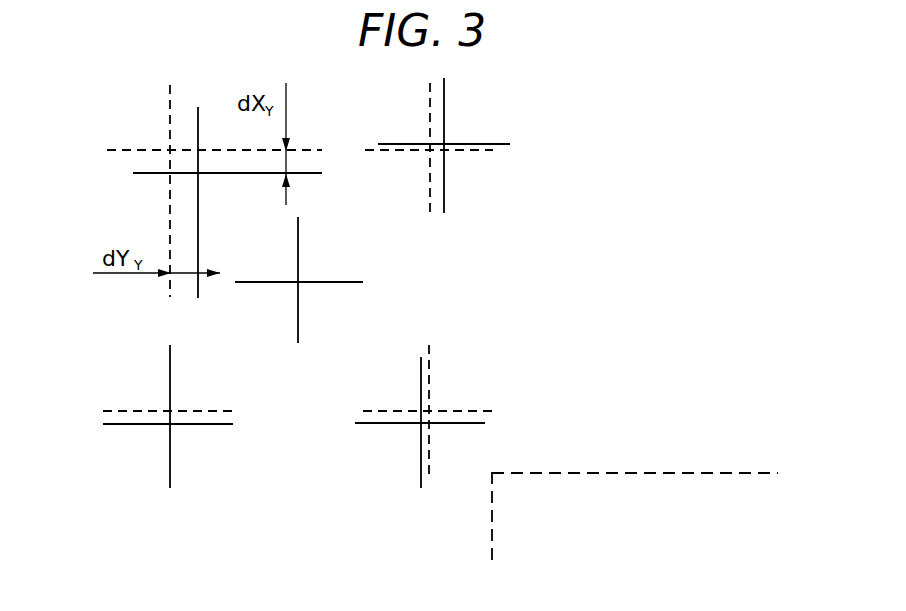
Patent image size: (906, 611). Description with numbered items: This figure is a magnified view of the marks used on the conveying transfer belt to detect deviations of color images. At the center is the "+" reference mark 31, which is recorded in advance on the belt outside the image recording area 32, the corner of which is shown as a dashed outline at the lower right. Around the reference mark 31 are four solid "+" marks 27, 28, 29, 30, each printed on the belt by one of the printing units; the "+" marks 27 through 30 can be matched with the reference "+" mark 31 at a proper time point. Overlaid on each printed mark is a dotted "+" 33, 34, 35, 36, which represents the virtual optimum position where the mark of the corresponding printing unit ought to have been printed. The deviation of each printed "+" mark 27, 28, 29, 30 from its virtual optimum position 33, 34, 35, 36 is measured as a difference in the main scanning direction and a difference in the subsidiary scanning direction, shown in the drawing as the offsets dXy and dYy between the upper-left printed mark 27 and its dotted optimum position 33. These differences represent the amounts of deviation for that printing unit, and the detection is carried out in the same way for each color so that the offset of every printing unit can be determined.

The "+" mark 27 is at (141, 173).
The "+" mark 28 is at (487, 143).
The "+" mark 29 is at (126, 425).
The "+" mark 30 is at (480, 423).
The reference mark 31 is at (352, 283).
The image recording area 32 is at (643, 485).
The virtual optimum position 33 is at (136, 150).
The virtual optimum position 34 is at (486, 151).
The virtual optimum position 35 is at (129, 411).
The virtual optimum position 36 is at (479, 411).